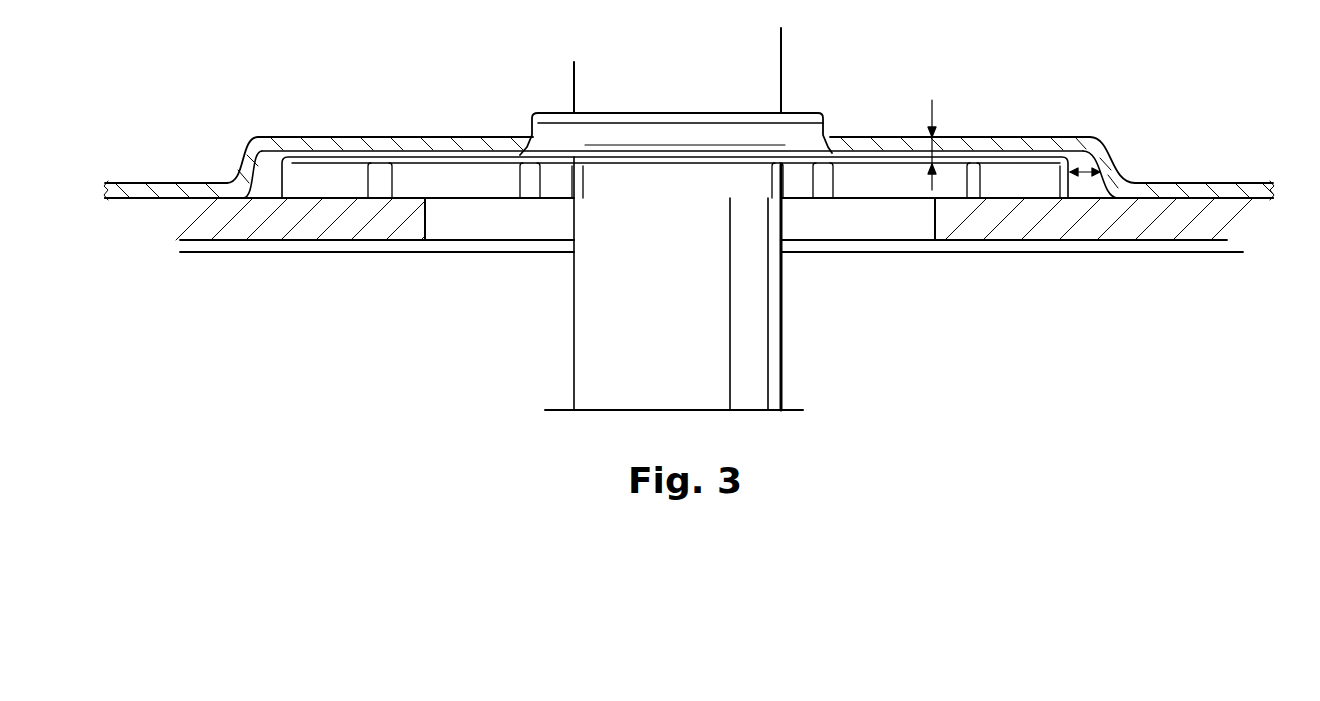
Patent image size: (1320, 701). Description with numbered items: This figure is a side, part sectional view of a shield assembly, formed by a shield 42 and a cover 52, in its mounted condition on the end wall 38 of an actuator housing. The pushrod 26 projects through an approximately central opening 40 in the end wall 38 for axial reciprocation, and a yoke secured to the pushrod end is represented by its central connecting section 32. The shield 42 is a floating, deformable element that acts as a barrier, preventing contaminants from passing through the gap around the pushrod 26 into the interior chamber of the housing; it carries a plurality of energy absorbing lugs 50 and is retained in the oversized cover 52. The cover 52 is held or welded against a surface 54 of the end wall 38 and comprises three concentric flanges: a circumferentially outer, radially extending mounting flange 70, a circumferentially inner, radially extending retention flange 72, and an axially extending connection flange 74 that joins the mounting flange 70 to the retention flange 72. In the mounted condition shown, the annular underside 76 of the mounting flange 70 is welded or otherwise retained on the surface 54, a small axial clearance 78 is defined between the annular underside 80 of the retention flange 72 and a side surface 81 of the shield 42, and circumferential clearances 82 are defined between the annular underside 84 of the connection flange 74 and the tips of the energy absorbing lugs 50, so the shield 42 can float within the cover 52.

The pushrod 26 is at (781, 58).
The central connecting section 32 is at (793, 405).
The end wall 38 is at (345, 240).
The central opening 40 is at (898, 140).
The shield 42 is at (503, 150).
The energy absorbing lugs 50 is at (276, 172).
The cover 52 is at (276, 135).
The surface 54 is at (248, 178).
The mounting flange 70 is at (1225, 183).
The retention flange 72 is at (988, 137).
The connection flange 74 is at (1113, 160).
The annular underside of mounting flange 76 is at (1212, 197).
The axial clearance 78 is at (932, 114).
The annular underside of retention flange 80 is at (437, 147).
The side surface 81 is at (1040, 153).
The circumferential clearances 82 is at (1086, 176).
The annular underside of connection flange 84 is at (250, 183).